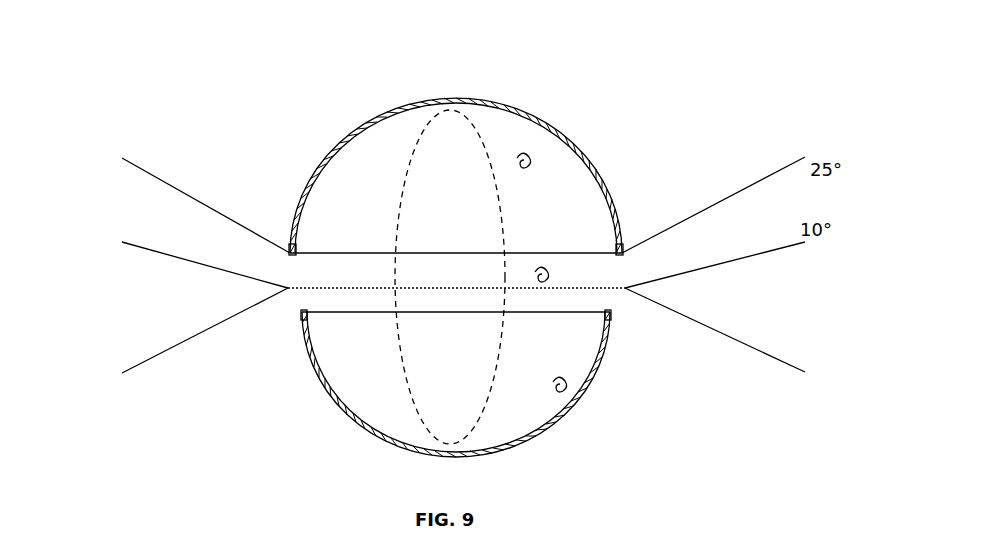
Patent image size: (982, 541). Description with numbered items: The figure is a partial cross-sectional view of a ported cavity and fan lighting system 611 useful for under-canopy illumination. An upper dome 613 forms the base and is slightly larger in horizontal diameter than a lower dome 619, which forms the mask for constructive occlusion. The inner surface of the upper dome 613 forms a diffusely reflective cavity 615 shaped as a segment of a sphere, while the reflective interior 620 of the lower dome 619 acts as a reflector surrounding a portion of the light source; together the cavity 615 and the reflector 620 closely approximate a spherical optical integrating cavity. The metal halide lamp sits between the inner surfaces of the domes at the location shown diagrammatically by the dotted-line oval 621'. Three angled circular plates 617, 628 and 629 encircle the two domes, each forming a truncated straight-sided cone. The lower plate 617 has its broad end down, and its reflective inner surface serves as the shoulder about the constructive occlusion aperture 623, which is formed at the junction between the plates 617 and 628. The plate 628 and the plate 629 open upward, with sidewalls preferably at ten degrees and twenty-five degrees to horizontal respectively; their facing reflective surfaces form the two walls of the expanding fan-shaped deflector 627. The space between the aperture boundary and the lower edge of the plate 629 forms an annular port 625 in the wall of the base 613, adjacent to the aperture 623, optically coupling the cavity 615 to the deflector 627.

The system 611 is at (204, 74).
The upper dome 613 is at (595, 153).
The diffusely reflective cavity 615 is at (533, 150).
The lower plate 617 is at (753, 348).
The lower dome 619 is at (356, 422).
The reflective interior 620 is at (565, 382).
The dotted-line oval 621' is at (404, 266).
The constructive occlusion aperture 623 is at (310, 290).
The annular port 625 is at (548, 272).
The expanding fan-shaped deflector 627 is at (713, 222).
The plate 628 is at (205, 265).
The plate 629 is at (206, 176).